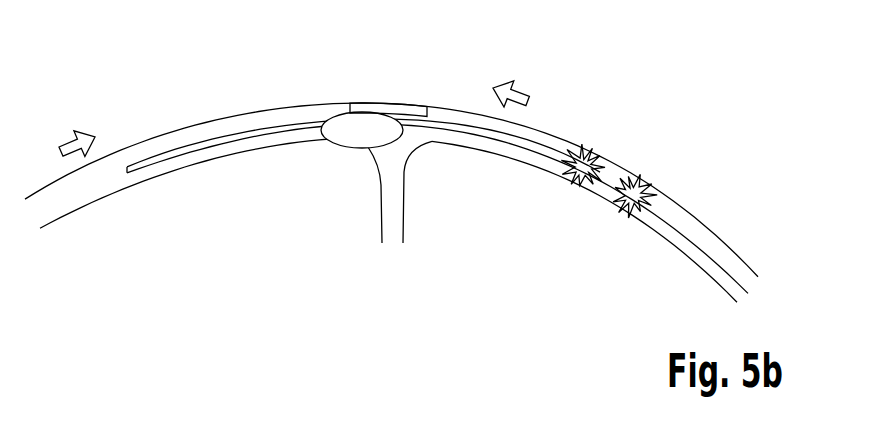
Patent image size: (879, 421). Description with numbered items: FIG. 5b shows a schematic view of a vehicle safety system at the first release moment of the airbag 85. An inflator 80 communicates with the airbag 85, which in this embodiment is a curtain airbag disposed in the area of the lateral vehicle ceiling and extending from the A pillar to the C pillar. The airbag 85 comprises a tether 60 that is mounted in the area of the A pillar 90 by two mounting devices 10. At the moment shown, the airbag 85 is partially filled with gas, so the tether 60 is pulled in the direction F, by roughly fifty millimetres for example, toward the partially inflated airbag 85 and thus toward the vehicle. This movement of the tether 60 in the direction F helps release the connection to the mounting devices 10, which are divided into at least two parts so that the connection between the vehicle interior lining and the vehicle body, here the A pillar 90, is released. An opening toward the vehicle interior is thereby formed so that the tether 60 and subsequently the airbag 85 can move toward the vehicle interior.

The A pillar 90 is at (165, 134).
The airbag 85 is at (241, 138).
The inflator 80 is at (384, 104).
The tether 60 is at (665, 213).
The mounting device 10 is at (570, 142).
The direction F is at (526, 92).